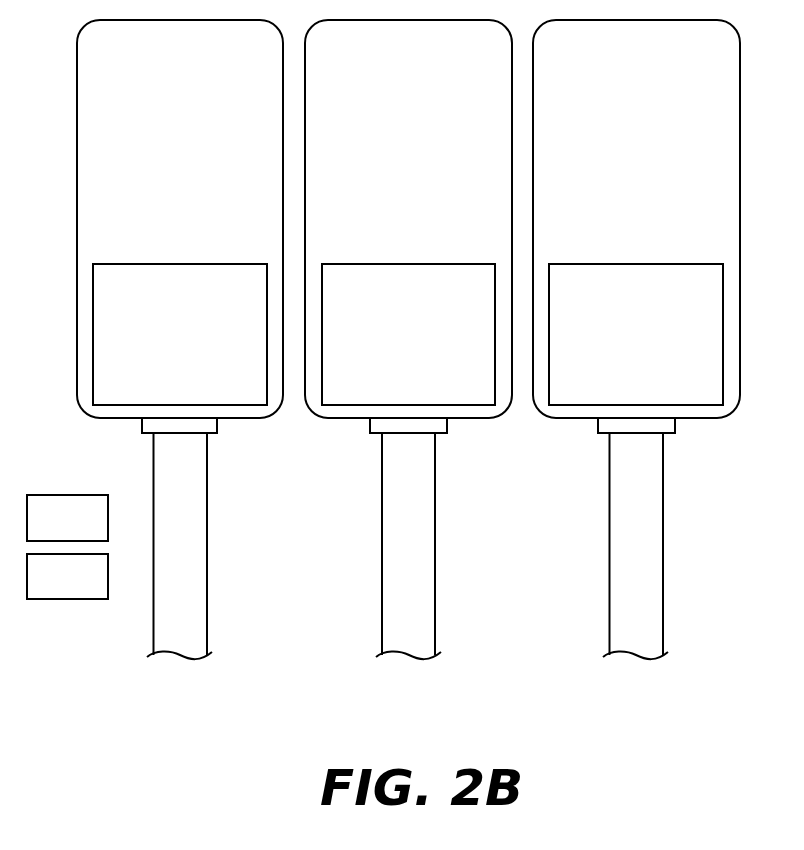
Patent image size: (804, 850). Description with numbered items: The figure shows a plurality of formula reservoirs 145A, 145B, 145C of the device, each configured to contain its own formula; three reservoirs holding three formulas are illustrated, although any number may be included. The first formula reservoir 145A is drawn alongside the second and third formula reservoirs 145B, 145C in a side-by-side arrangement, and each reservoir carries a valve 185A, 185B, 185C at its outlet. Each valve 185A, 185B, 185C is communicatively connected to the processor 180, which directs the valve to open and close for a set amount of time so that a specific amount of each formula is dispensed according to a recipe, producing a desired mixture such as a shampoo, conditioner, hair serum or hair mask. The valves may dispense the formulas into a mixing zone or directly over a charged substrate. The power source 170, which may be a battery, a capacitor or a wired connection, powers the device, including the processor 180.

The first formula reservoir 145A is at (180, 219).
The formula reservoir 145B is at (408, 219).
The formula reservoir 145C is at (636, 219).
The valve 185A is at (216, 423).
The valve 185B is at (446, 423).
The valve 185C is at (674, 423).
The power source 170 is at (67, 518).
The processor 180 is at (67, 576).